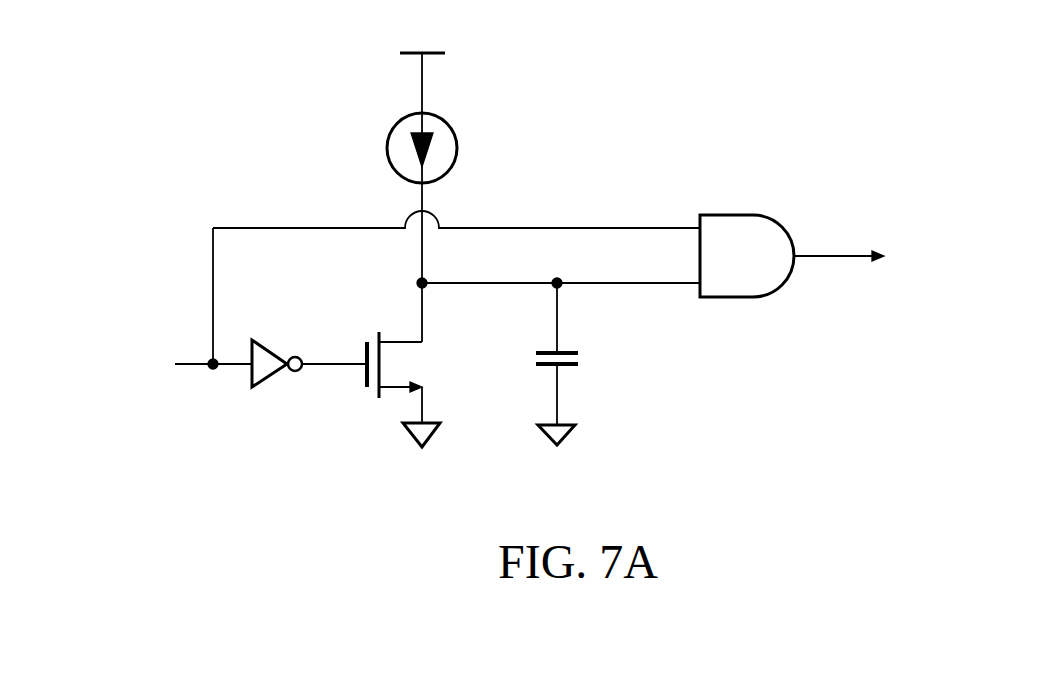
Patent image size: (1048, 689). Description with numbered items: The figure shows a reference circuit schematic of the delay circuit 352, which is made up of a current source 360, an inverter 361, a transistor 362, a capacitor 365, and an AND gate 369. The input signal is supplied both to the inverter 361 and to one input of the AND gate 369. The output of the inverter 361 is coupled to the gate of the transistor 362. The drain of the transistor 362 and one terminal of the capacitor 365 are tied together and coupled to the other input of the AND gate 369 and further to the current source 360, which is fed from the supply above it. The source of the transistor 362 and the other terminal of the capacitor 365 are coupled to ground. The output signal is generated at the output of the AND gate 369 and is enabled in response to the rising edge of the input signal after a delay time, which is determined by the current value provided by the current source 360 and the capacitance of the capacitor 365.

The delay circuit 352 is at (885, 71).
The current source 360 is at (386, 150).
The inverter 361 is at (270, 377).
The transistor 362 is at (393, 322).
The capacitor 365 is at (565, 345).
The AND gate 369 is at (750, 215).